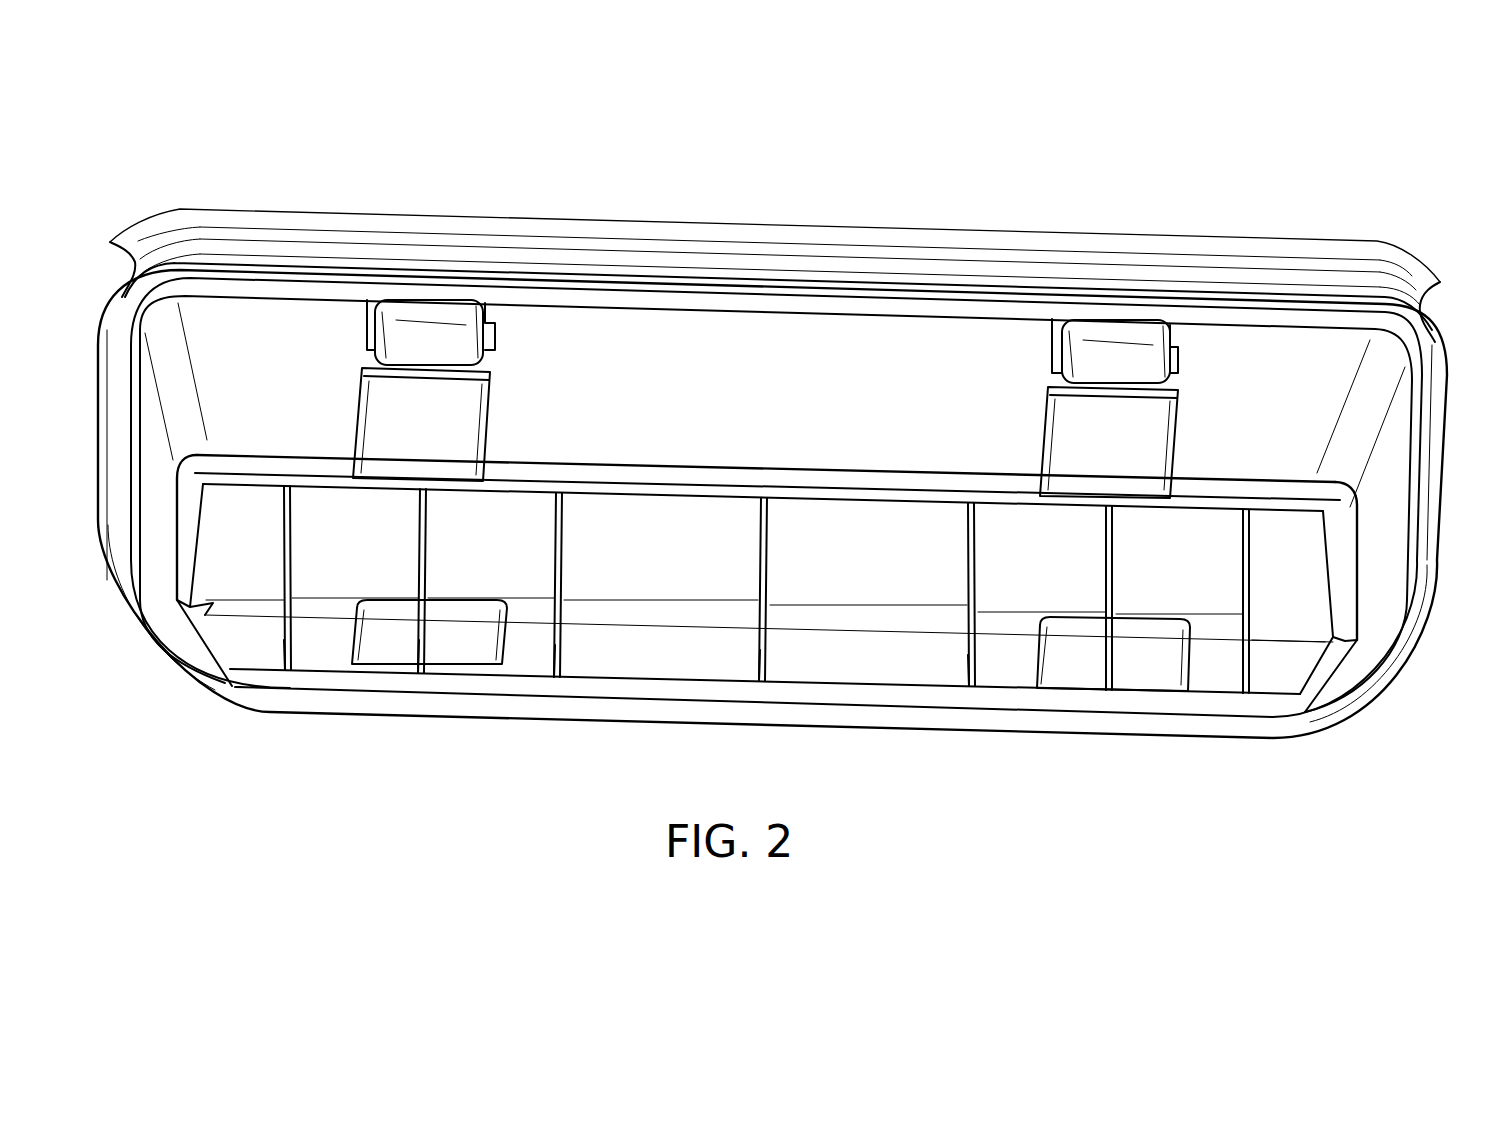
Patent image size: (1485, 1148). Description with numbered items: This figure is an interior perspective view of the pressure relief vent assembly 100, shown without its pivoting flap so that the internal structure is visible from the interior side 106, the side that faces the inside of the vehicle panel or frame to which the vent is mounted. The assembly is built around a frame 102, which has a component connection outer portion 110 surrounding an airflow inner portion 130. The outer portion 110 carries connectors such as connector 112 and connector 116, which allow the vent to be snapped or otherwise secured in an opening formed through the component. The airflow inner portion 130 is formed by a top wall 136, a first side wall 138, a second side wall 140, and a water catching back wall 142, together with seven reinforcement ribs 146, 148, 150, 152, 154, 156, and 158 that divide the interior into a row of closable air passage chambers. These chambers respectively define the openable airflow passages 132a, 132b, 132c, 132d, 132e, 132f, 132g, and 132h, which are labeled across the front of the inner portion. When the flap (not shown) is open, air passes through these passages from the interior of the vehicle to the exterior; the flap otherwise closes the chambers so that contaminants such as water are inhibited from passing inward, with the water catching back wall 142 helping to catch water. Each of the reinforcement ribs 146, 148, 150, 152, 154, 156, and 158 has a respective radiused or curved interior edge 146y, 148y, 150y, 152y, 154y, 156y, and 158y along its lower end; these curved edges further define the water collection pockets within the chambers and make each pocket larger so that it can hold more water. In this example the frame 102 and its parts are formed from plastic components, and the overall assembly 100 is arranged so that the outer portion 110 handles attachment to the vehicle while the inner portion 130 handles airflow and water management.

The pressure relief vent assembly 100 is at (290, 800).
The frame 102 is at (1392, 696).
The interior side 106 is at (712, 340).
The component connection outer portion 110 is at (1200, 222).
The connector 112 is at (976, 228).
The connector 116 is at (1110, 318).
The airflow inner portion 130 is at (1066, 722).
The openable airflow passage 132a is at (1322, 635).
The openable airflow passage 132b is at (1214, 596).
The openable airflow passage 132c is at (1074, 593).
The openable airflow passage 132d is at (902, 591).
The openable airflow passage 132e is at (697, 587).
The openable airflow passage 132f is at (522, 579).
The openable airflow passage 132g is at (390, 575).
The openable airflow passage 132h is at (269, 581).
The top wall 136 is at (681, 510).
The first side wall 138 is at (1317, 597).
The second side wall 140 is at (243, 522).
The water catching back wall 142 is at (861, 680).
The reinforcement rib 146 is at (1288, 541).
The reinforcement rib 148 is at (1126, 558).
The reinforcement rib 150 is at (990, 553).
The reinforcement rib 152 is at (810, 536).
The reinforcement rib 154 is at (575, 545).
The reinforcement rib 156 is at (467, 530).
The reinforcement rib 158 is at (330, 523).
The radiused interior edge 146y is at (1247, 660).
The radiused interior edge 148y is at (1107, 648).
The radiused interior edge 150y is at (972, 652).
The radiused interior edge 152y is at (764, 642).
The radiused interior edge 154y is at (558, 635).
The radiused interior edge 156y is at (423, 633).
The radiused interior edge 158y is at (285, 637).